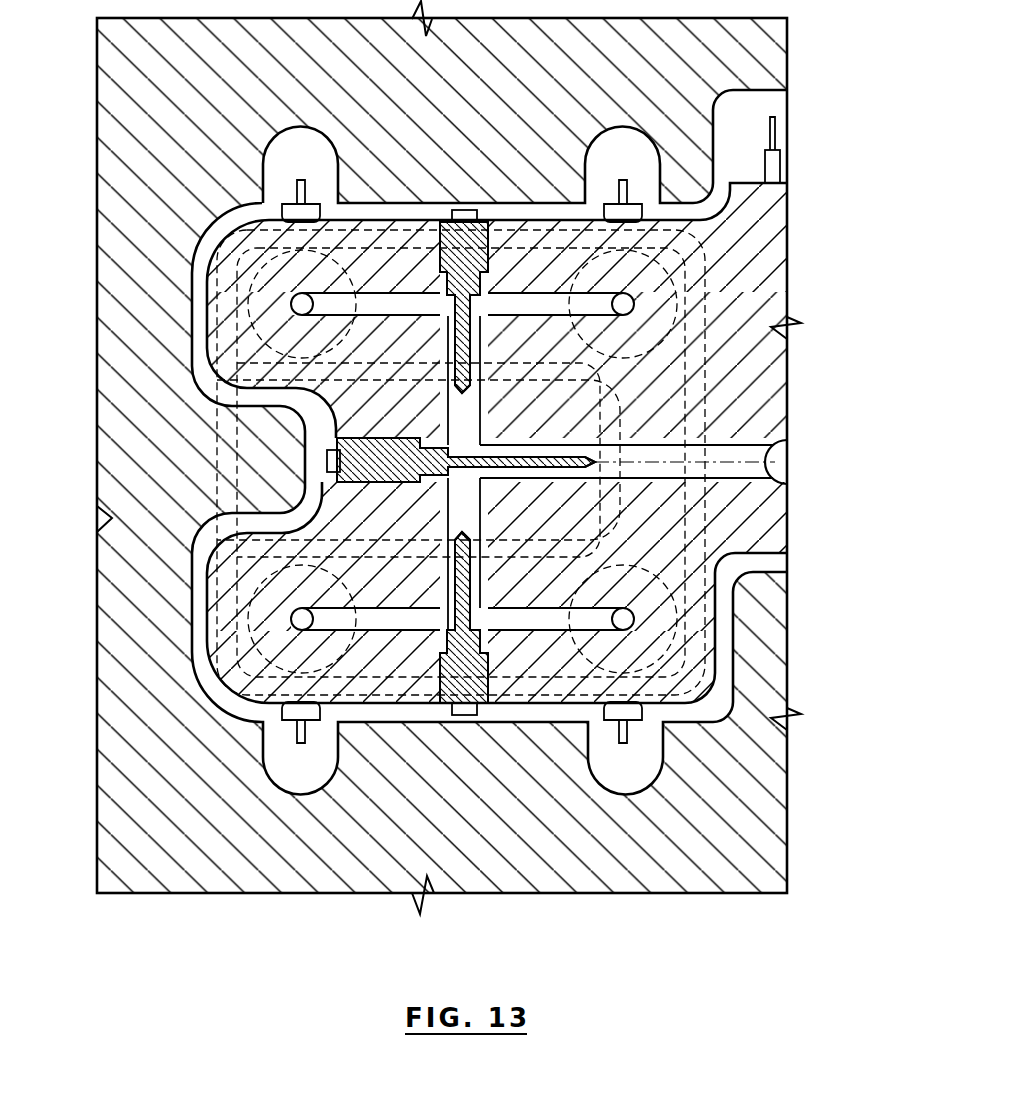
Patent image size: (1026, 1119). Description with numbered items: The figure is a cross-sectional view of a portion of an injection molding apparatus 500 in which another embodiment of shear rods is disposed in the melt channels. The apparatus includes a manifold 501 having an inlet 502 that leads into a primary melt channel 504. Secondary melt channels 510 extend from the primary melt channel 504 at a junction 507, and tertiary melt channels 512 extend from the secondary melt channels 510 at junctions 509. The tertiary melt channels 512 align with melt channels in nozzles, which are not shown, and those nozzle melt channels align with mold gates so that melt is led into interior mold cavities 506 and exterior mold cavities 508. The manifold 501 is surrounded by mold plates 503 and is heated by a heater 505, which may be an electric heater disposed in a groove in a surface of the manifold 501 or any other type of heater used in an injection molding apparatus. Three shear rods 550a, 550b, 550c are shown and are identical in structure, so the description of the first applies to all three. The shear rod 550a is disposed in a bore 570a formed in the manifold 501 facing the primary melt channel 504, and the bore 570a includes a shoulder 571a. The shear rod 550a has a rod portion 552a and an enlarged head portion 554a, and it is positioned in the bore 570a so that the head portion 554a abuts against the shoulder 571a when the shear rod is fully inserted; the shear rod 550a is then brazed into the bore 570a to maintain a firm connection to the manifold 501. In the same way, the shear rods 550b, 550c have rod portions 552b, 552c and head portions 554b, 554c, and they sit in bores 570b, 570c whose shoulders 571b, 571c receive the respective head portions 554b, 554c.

The injection molding apparatus 500 is at (836, 186).
The manifold 501 is at (775, 528).
The inlet 502 is at (793, 460).
The mold plates 503 is at (775, 748).
The primary melt channel 504 is at (787, 430).
The heater 505 is at (762, 346).
The interior mold cavities 506 is at (775, 262).
The junction 507 is at (502, 460).
The exterior mold cavities 508 is at (205, 287).
The junctions 509 is at (445, 320).
The secondary melt channels 510 is at (214, 514).
The tertiary melt channels 512 is at (362, 634).
The shear rod 550a is at (348, 446).
The shear rod 550b is at (488, 692).
The shear rod 550c is at (492, 274).
The rod portion 552a is at (538, 443).
The rod portion 552b is at (484, 560).
The rod portion 552c is at (482, 337).
The head portion 554a is at (328, 462).
The head portion 554b is at (492, 683).
The head portion 554c is at (480, 256).
The bore 570a is at (332, 440).
The bore 570b is at (445, 705).
The bore 570c is at (440, 268).
The shoulder 571a is at (432, 438).
The shoulder 571b is at (447, 714).
The shoulder 571c is at (452, 212).